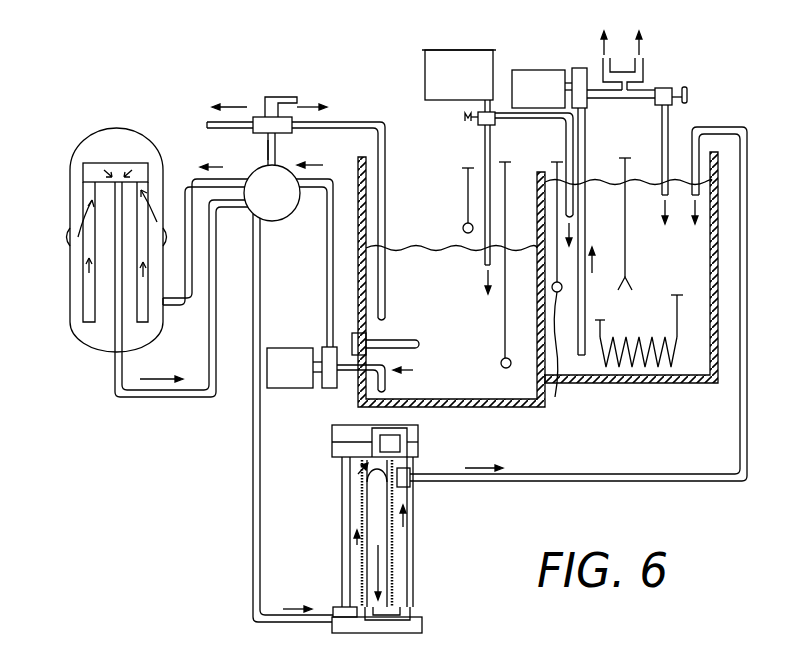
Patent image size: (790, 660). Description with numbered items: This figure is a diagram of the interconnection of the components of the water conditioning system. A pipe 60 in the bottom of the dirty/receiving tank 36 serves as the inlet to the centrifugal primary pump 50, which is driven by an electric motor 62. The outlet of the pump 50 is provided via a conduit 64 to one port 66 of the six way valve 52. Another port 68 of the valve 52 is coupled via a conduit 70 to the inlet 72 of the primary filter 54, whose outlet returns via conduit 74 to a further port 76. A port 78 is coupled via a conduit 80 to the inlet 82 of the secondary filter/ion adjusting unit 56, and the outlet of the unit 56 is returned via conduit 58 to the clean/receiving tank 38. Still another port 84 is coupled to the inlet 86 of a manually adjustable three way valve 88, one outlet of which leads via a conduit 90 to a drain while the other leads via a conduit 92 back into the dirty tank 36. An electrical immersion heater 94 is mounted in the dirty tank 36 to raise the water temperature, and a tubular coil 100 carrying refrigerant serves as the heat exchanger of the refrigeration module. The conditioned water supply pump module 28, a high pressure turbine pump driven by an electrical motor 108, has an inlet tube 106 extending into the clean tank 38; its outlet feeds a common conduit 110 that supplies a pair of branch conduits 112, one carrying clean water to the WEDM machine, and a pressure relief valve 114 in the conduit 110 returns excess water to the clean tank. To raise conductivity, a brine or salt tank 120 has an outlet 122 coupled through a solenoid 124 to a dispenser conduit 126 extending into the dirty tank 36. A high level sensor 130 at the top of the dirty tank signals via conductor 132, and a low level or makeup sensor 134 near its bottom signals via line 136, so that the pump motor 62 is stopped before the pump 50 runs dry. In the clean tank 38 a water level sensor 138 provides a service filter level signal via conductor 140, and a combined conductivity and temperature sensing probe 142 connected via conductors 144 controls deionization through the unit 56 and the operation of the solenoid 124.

The conditioned water supply pump module 28 is at (576, 68).
The dirty/receiving tank 36 is at (452, 309).
The clean/receiving tank 38 is at (684, 287).
The centrifugal primary pump 50 is at (330, 378).
The six way valve 52 is at (286, 207).
The primary filter 54 is at (133, 161).
The secondary filter/ion adjusting unit 56 is at (420, 434).
The conduit 58 is at (436, 487).
The pipe 60 is at (393, 390).
The electric motor 62 is at (289, 378).
The conduit 64 is at (327, 296).
The port 66 is at (305, 190).
The port 68 is at (247, 177).
The conduit 70 is at (188, 178).
The inlet 72 is at (163, 306).
The conduit 74 is at (122, 371).
The port 76 is at (244, 206).
The port 78 is at (262, 222).
The conduit 80 is at (261, 498).
The inlet 82 is at (333, 610).
The port 84 is at (279, 160).
The inlet 86 is at (288, 134).
The manually adjustable three way valve 88 is at (282, 120).
The conduit 90 is at (212, 124).
The conduit 92 is at (373, 121).
The electrical immersion heater 94 is at (421, 343).
The tubular coil 100 is at (628, 325).
The inlet tube 106 is at (585, 295).
The electrical motor 108 is at (527, 80).
The common conduit 110 is at (603, 100).
The supply or branch conduits 112 is at (627, 57).
The pressure relief valve 114 is at (670, 88).
The means for increasing conductivity 120 is at (450, 60).
The outlet 122 is at (483, 107).
The solenoid 124 is at (478, 127).
The dispenser conduit 126 is at (485, 262).
The high level sensor 130 is at (463, 229).
The conductor 132 is at (467, 178).
The low level or makeup sensor 134 is at (502, 366).
The line 136 is at (503, 190).
The water level sensor 138 is at (584, 354).
The conductor 140 is at (565, 163).
The conductivity and temperature sensing probe 142 is at (636, 276).
The conductors 144 is at (636, 135).